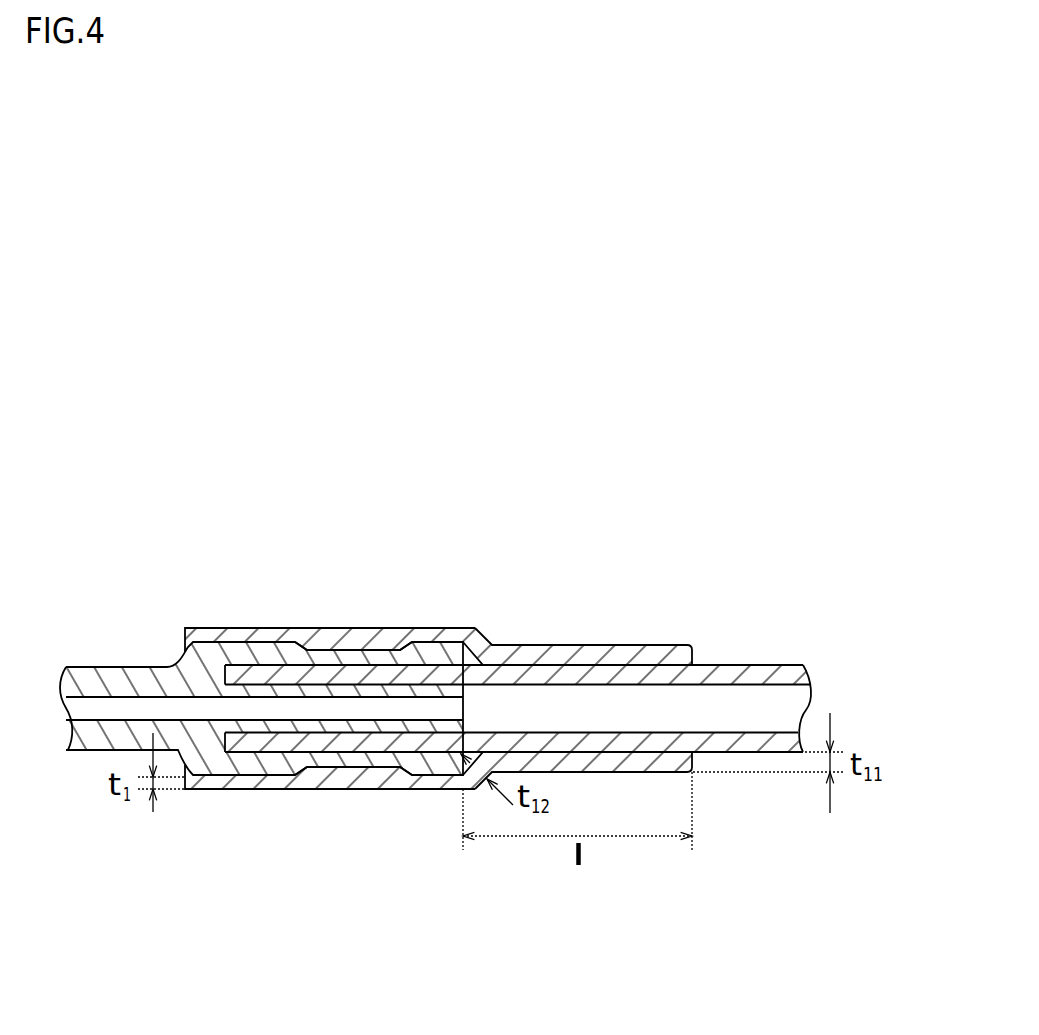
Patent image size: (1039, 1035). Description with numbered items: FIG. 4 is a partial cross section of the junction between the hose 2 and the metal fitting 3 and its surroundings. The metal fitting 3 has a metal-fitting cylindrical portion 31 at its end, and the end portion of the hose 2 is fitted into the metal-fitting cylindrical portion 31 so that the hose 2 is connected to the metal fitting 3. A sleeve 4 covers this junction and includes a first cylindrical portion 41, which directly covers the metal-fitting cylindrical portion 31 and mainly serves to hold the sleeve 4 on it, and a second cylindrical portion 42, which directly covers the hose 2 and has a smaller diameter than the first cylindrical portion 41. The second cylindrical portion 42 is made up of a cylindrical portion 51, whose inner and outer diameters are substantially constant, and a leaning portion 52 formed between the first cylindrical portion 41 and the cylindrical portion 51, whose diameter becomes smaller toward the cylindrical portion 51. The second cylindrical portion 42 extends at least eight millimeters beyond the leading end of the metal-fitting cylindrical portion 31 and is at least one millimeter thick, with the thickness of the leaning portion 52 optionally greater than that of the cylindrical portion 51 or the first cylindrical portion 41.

The hose 2 is at (762, 648).
The metal fitting 3 is at (112, 648).
The metal-fitting cylindrical portion 31 is at (347, 647).
The sleeve 4 is at (438, 605).
The first cylindrical portion 41 is at (463, 628).
The second cylindrical portion 42 is at (577, 605).
The cylindrical portion 51 is at (692, 549).
The leaning portion 52 is at (492, 645).